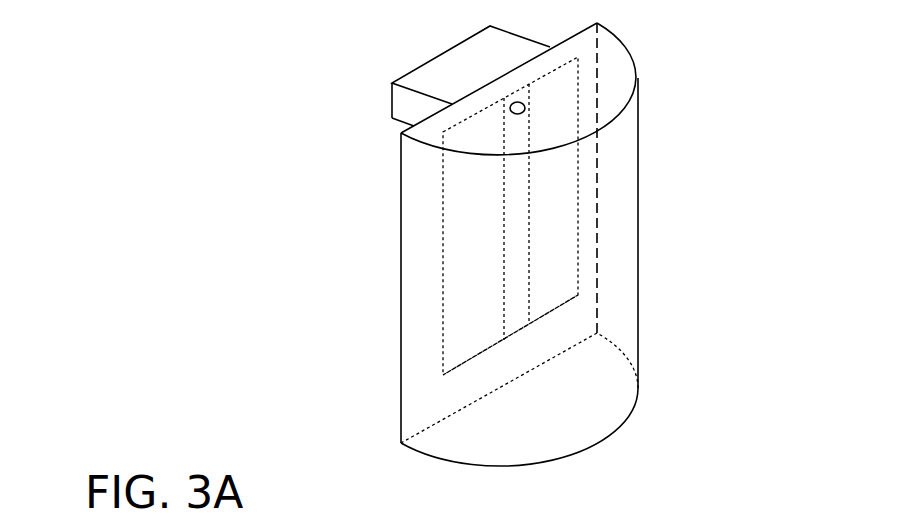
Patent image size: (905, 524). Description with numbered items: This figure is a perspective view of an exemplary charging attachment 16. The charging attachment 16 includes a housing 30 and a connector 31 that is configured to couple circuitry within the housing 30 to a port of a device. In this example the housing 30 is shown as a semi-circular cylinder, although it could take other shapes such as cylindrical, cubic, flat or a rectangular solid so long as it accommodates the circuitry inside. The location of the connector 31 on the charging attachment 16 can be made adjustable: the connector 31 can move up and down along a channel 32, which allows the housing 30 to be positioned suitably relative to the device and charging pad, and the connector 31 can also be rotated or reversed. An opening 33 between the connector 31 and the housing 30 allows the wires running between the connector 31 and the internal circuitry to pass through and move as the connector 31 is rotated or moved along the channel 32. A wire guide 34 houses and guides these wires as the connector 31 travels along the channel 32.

The charging attachment 16 is at (353, 133).
The housing 30 is at (638, 206).
The connector 31 is at (395, 120).
The channel 32 is at (452, 313).
The opening 33 is at (514, 102).
The wire guide 34 is at (518, 322).